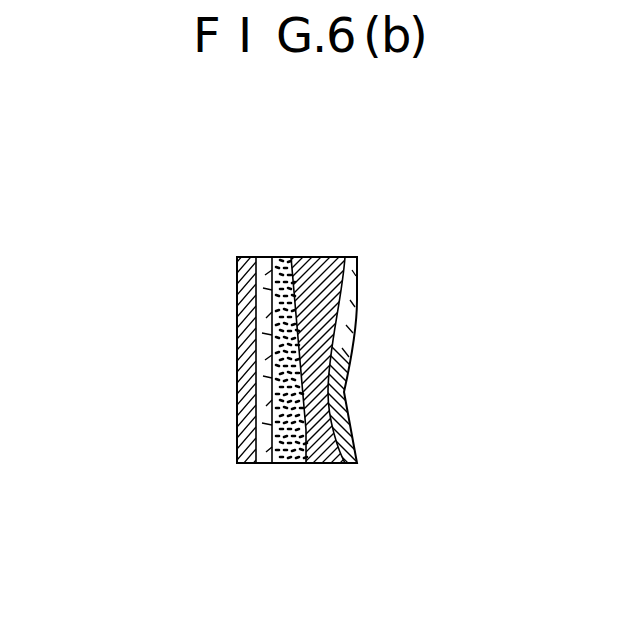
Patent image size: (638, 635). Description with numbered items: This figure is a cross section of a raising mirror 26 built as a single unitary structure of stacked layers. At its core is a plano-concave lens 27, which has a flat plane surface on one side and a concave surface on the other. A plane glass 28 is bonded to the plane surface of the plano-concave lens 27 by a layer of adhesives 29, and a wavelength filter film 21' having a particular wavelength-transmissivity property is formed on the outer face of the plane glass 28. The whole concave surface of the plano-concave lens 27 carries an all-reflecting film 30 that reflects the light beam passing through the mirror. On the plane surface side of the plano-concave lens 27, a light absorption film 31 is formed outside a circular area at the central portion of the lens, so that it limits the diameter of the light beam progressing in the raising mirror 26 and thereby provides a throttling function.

The raising mirror 26 is at (232, 253).
The wavelength filter film 21' is at (193, 408).
The plane glass 28 is at (262, 295).
The adhesives 29 is at (283, 400).
The plano-concave lens 27 is at (330, 285).
The all-reflecting film 30 is at (347, 398).
The light absorption film 31 is at (316, 415).